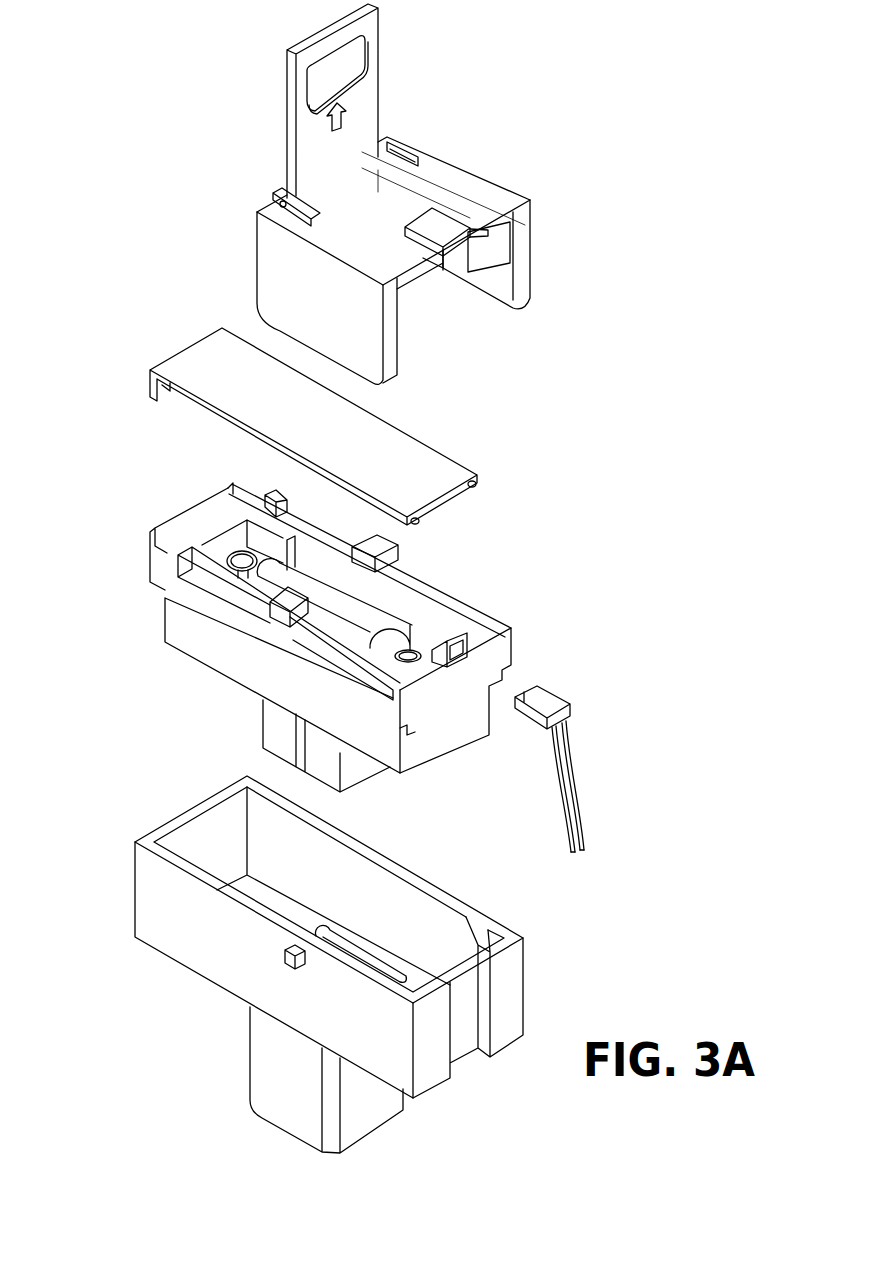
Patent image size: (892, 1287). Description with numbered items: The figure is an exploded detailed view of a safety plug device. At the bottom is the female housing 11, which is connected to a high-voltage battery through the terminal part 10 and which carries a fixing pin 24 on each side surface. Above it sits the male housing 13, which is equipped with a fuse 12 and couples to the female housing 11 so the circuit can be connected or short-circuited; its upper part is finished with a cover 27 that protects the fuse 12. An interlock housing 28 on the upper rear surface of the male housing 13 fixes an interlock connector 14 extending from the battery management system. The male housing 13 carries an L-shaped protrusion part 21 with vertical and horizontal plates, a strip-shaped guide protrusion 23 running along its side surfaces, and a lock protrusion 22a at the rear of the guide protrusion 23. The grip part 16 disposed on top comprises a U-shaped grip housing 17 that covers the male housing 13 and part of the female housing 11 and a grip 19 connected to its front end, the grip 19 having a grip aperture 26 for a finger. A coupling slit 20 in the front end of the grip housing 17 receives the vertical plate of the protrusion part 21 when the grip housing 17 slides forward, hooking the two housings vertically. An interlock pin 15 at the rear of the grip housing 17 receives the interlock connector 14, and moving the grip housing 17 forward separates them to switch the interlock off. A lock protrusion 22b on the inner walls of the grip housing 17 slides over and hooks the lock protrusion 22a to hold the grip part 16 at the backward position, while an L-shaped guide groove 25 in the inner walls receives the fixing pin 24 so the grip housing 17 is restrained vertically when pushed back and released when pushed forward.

The terminal part 10 is at (266, 1068).
The female housing 11 is at (150, 895).
The fuse 12 is at (363, 617).
The male housing 13 is at (190, 630).
The interlock connector 14 is at (555, 698).
The interlock pin 15 is at (447, 220).
The grip part 16 is at (437, 146).
The grip housing 17 is at (373, 348).
The grip 19 is at (305, 148).
The coupling slit 20 is at (392, 146).
The protrusion part 21 is at (270, 618).
The lock protrusion 22a is at (357, 667).
The lock protrusion 22b is at (482, 236).
The guide protrusion 23 is at (200, 600).
The fixing pin 24 is at (283, 958).
The guide groove 25 is at (443, 252).
The grip aperture 26 is at (346, 59).
The cover 27 is at (203, 348).
The interlock housing 28 is at (478, 624).